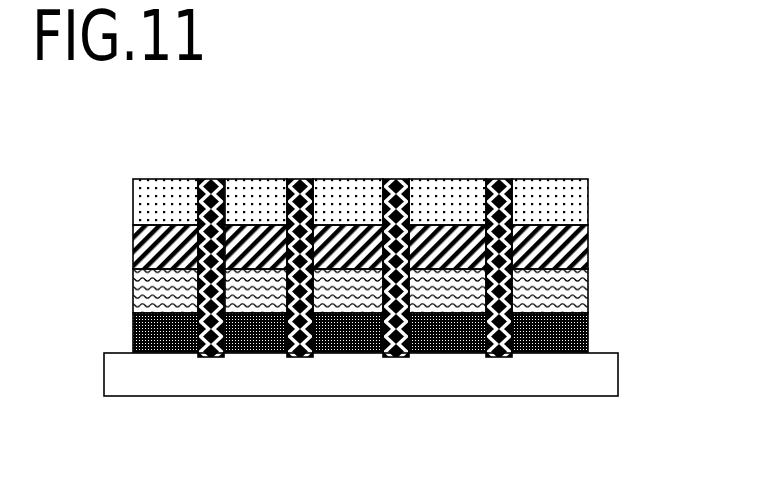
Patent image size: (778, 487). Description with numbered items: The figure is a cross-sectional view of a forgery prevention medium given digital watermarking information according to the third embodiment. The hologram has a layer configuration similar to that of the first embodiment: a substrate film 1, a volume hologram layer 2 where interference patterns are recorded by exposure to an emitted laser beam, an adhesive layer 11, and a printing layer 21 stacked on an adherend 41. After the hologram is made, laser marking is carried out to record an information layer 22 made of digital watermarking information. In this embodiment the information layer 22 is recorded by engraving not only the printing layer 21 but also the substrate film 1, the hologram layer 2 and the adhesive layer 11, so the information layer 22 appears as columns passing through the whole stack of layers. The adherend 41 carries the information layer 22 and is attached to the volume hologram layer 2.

The substrate film 1 is at (567, 208).
The volume hologram layer 2 is at (565, 242).
The adhesive layer 11 is at (566, 292).
The printing layer 21 is at (565, 328).
The information layer 22 is at (498, 182).
The adherend 41 is at (570, 364).